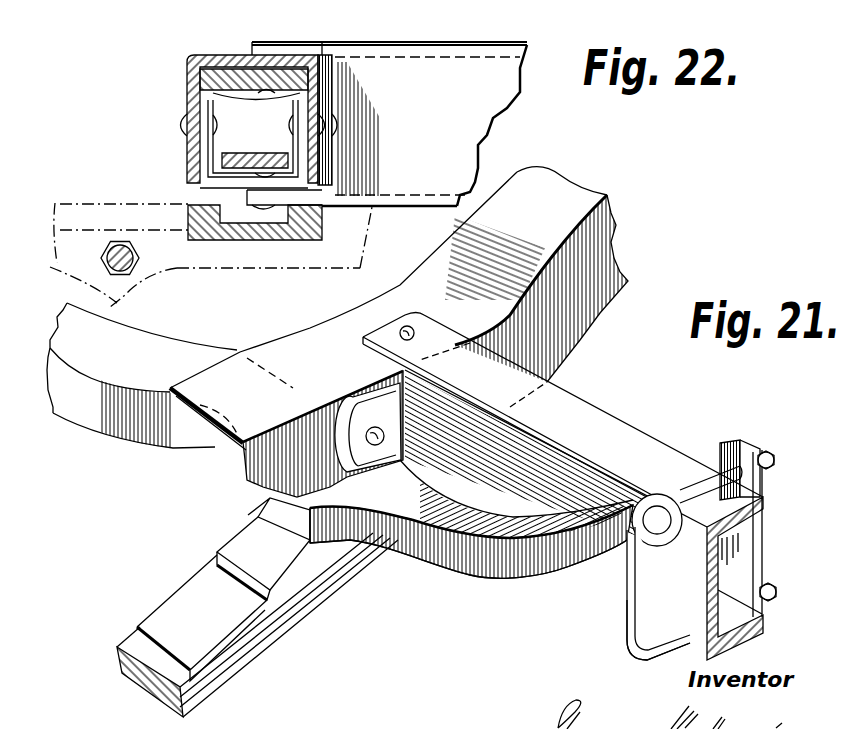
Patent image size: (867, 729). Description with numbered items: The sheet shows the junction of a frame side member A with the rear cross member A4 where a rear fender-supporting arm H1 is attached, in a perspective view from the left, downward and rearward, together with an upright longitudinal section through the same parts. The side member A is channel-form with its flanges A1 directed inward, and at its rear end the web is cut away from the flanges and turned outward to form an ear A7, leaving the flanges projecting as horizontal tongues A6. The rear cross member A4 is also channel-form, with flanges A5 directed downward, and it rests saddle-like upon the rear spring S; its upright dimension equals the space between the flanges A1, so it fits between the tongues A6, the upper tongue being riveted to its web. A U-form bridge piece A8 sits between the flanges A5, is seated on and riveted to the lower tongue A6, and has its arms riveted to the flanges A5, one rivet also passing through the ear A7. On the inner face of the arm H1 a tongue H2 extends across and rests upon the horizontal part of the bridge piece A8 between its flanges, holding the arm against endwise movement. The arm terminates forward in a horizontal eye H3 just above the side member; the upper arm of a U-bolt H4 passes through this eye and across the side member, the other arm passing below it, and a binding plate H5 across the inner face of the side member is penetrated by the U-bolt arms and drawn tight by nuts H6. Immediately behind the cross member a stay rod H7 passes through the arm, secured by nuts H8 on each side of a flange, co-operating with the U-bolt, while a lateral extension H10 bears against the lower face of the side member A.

In FIG. 22, the side member A is at (442, 65).
In FIG. 21, the side member A is at (545, 577).
In FIG. 21, the flange A1 is at (624, 440).
In FIG. 22, the rear cross member A4 is at (232, 50).
In FIG. 21, the rear cross member A4 is at (558, 184).
In FIG. 22, the flange A5 is at (200, 72).
In FIG. 21, the flange A5 is at (205, 432).
In FIG. 22, the tongue A6 is at (305, 45).
In FIG. 21, the tongue A6 is at (418, 325).
In FIG. 22, the ear A7 is at (335, 150).
In FIG. 21, the ear A7 is at (362, 463).
In FIG. 22, the U-form bridge piece A8 is at (205, 190).
In FIG. 21, the supporting arm H1 is at (142, 375).
In FIG. 22, the tongue H2 is at (256, 152).
In FIG. 21, the horizontal eye H3 is at (628, 512).
In FIG. 21, the U-bolt H4 is at (626, 640).
In FIG. 21, the binding plate H5 is at (735, 442).
In FIG. 21, the nut H6 is at (766, 450).
In FIG. 22, the stay rod H7 is at (125, 278).
In FIG. 22, the nut H8 is at (141, 257).
In FIG. 22, the lateral extension H10 is at (250, 232).
In FIG. 21, the rear spring S is at (273, 630).